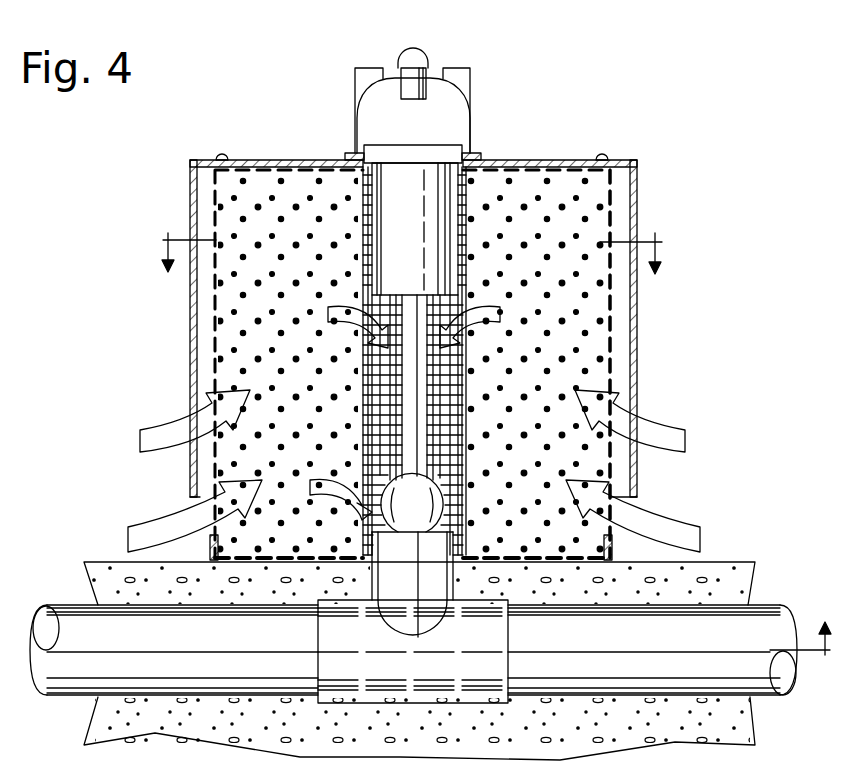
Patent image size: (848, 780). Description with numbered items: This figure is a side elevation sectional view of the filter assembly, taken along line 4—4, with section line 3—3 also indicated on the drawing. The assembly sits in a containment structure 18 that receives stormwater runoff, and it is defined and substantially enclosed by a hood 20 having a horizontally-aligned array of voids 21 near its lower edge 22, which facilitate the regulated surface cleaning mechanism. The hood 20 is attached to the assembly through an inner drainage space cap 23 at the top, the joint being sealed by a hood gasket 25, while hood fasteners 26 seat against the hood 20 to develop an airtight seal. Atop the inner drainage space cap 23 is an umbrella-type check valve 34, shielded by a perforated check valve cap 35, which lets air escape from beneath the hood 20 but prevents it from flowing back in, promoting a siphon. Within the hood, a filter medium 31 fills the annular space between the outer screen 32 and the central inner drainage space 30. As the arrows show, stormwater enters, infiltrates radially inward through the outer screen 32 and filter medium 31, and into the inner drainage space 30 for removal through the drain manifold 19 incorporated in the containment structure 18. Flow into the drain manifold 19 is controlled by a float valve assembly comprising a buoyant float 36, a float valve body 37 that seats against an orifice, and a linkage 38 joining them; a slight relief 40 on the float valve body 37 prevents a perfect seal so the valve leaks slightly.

The containment structure 18 is at (722, 560).
The drain manifold 19 is at (654, 646).
The hood 20 is at (190, 215).
The voids 21 is at (190, 428).
The lower edge 22 is at (190, 497).
The inner drainage space cap 23 is at (472, 132).
The hood gasket 25 is at (349, 153).
The hood fasteners 26 is at (221, 153).
The inner drainage space 30 is at (442, 380).
The filter medium 31 is at (557, 368).
The outer screen 32 is at (612, 218).
The check valve 34 is at (411, 66).
The check valve cap 35 is at (419, 50).
The buoyant float 36 is at (411, 228).
The float valve body 37 is at (399, 518).
The linkage 38 is at (410, 402).
The relief 40 is at (372, 532).
The section line 3 is at (411, 269).
The section line 4 is at (800, 625).